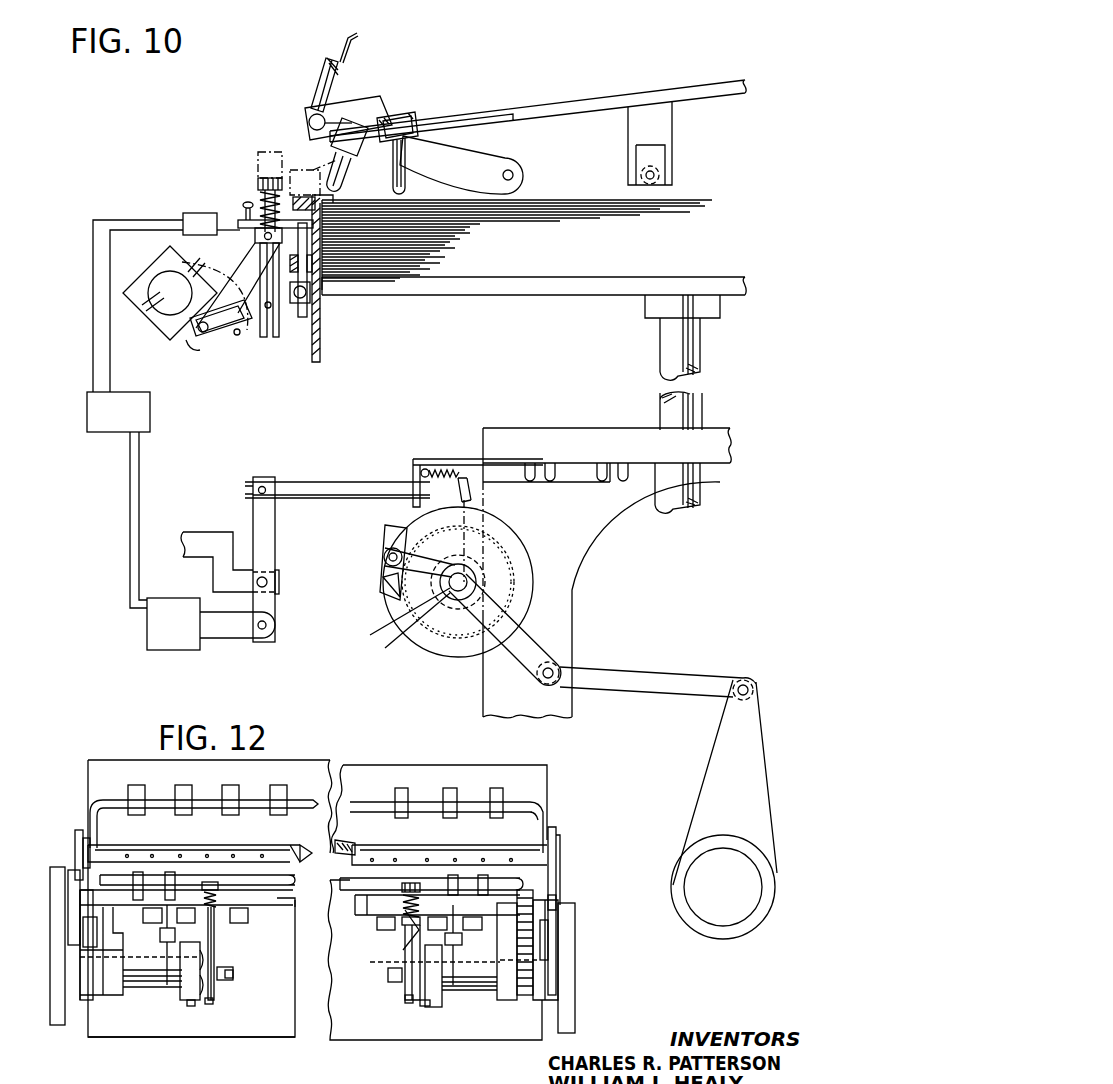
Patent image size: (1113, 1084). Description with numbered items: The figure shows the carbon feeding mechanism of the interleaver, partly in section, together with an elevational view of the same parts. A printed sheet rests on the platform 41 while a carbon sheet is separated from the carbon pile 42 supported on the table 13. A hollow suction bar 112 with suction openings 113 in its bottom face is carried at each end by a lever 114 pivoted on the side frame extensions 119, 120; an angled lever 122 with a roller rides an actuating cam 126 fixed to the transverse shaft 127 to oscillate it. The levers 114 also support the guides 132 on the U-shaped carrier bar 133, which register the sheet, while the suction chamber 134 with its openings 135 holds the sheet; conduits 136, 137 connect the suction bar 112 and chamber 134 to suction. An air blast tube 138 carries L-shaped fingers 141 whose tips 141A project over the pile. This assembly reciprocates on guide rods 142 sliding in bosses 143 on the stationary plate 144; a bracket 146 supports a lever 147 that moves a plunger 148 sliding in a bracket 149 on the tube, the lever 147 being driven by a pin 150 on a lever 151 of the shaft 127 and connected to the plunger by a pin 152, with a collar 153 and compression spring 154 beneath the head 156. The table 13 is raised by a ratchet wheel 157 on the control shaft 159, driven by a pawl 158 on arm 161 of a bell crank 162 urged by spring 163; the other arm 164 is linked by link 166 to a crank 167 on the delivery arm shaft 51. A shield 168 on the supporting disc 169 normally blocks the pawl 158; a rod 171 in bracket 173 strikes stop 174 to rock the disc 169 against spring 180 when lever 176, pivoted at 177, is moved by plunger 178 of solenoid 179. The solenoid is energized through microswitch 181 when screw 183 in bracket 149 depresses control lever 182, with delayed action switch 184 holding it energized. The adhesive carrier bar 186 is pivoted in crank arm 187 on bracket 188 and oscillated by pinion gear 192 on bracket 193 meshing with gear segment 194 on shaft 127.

In FIG. 10, the table 13 is at (578, 287).
In FIG. 10, the platform 41 is at (548, 108).
In FIG. 12, the platform 41 is at (525, 782).
In FIG. 10, the carbon pile 42 is at (575, 212).
In FIG. 10, the delivery arm shaft 51 is at (735, 895).
In FIG. 10, the suction bar 112 is at (358, 122).
In FIG. 12, the suction bar 112 is at (535, 862).
In FIG. 10, the suction openings 113 is at (352, 138).
In FIG. 12, the suction openings 113 is at (235, 855).
In FIG. 10, the lever 114 is at (467, 158).
In FIG. 12, the lever 114 is at (75, 841).
In FIG. 12, the side frame extension 119 is at (55, 970).
In FIG. 12, the side frame extension 120 is at (565, 942).
In FIG. 12, the angled lever 122 is at (78, 908).
In FIG. 12, the actuating cam 126 is at (88, 925).
In FIG. 10, the transverse shaft 127 is at (163, 297).
In FIG. 12, the transverse shaft 127 is at (480, 980).
In FIG. 10, the guides 132 is at (343, 42).
In FIG. 12, the guides 132 is at (274, 797).
In FIG. 10, the U-shaped carrier bar 133 is at (327, 63).
In FIG. 12, the U-shaped carrier bar 133 is at (162, 803).
In FIG. 10, the suction chamber 134 is at (410, 122).
In FIG. 12, the suction chamber 134 is at (298, 853).
In FIG. 10, the openings 135 is at (393, 120).
In FIG. 10, the conduit 136 is at (346, 174).
In FIG. 10, the conduit 137 is at (406, 188).
In FIG. 10, the air blast tube 138 is at (302, 197).
In FIG. 12, the air blast tube 138 is at (248, 905).
In FIG. 10, the L-shaped fingers 141 is at (324, 206).
In FIG. 10, the finger tips 141A is at (345, 203).
In FIG. 10, the guide rods 142 is at (301, 318).
In FIG. 12, the guide rods 142 is at (166, 957).
In FIG. 10, the boss 143 is at (321, 252).
In FIG. 12, the boss 143 is at (160, 936).
In FIG. 10, the stationary plate 144 is at (321, 343).
In FIG. 12, the stationary plate 144 is at (250, 1030).
In FIG. 10, the bracket 146 is at (321, 310).
In FIG. 12, the bracket 146 is at (233, 977).
In FIG. 10, the lever 147 is at (237, 334).
In FIG. 12, the lever 147 is at (208, 999).
In FIG. 10, the plunger 148 is at (264, 327).
In FIG. 12, the plunger 148 is at (209, 942).
In FIG. 10, the bracket 149 is at (318, 247).
In FIG. 12, the bracket 149 is at (215, 913).
In FIG. 10, the pin 150 is at (202, 348).
In FIG. 12, the pin 150 is at (203, 1002).
In FIG. 10, the lever 151 is at (192, 328).
In FIG. 12, the lever 151 is at (188, 1005).
In FIG. 10, the pin 152 is at (272, 335).
In FIG. 10, the collar 153 is at (262, 238).
In FIG. 12, the collar 153 is at (412, 917).
In FIG. 10, the compression spring 154 is at (258, 200).
In FIG. 12, the compression spring 154 is at (420, 885).
In FIG. 10, the head 156 is at (262, 185).
In FIG. 12, the head 156 is at (410, 880).
In FIG. 10, the ratchet wheel 157 is at (442, 623).
In FIG. 10, the pawl 158 is at (383, 590).
In FIG. 10, the control shaft 159 is at (384, 648).
In FIG. 10, the arm 161 is at (372, 630).
In FIG. 10, the bell crank 162 is at (474, 582).
In FIG. 10, the spring 163 is at (383, 556).
In FIG. 10, the arm 164 is at (517, 638).
In FIG. 10, the link 166 is at (645, 683).
In FIG. 10, the crank 167 is at (723, 737).
In FIG. 10, the shield 168 is at (495, 533).
In FIG. 10, the supporting disc 169 is at (528, 594).
In FIG. 10, the rod 171 is at (343, 490).
In FIG. 10, the bracket 173 is at (443, 460).
In FIG. 10, the stop 174 is at (462, 495).
In FIG. 10, the lever 176 is at (265, 525).
In FIG. 10, the pivot 177 is at (268, 582).
In FIG. 10, the plunger 178 is at (233, 628).
In FIG. 10, the solenoid 179 is at (173, 640).
In FIG. 10, the spring 180 is at (428, 470).
In FIG. 10, the microswitch 181 is at (183, 225).
In FIG. 10, the control lever 182 is at (240, 230).
In FIG. 10, the screw 183 is at (255, 232).
In FIG. 10, the delayed action switch 184 is at (130, 417).
In FIG. 12, the carrier bar 186 is at (500, 882).
In FIG. 12, the crank arm 187 is at (100, 892).
In FIG. 12, the bracket 188 is at (112, 985).
In FIG. 12, the pinion gear 192 is at (556, 905).
In FIG. 12, the bracket 193 is at (507, 987).
In FIG. 12, the gear segment 194 is at (540, 961).